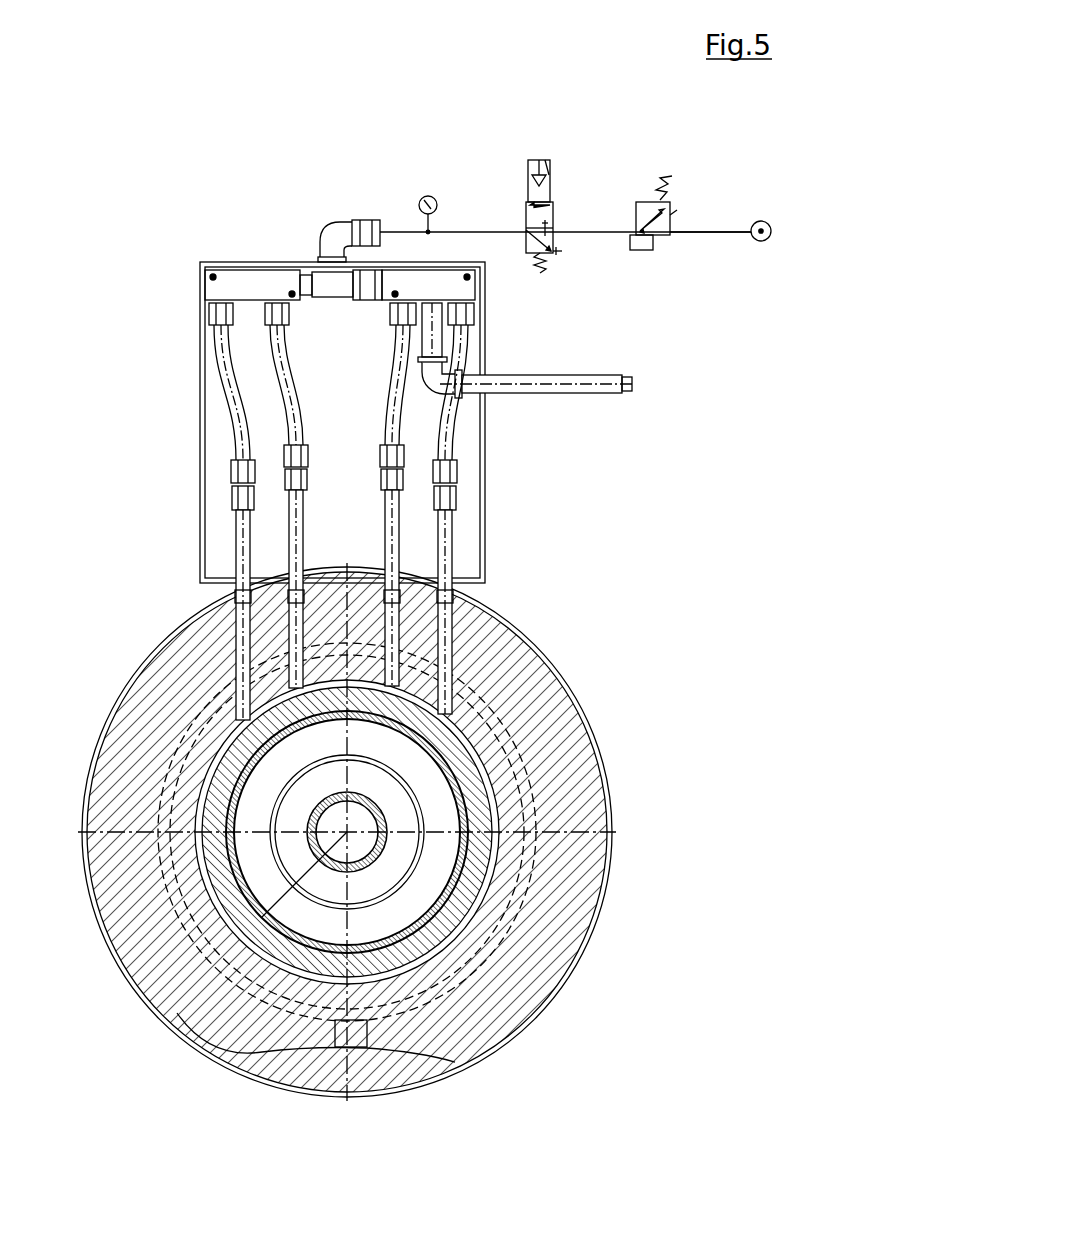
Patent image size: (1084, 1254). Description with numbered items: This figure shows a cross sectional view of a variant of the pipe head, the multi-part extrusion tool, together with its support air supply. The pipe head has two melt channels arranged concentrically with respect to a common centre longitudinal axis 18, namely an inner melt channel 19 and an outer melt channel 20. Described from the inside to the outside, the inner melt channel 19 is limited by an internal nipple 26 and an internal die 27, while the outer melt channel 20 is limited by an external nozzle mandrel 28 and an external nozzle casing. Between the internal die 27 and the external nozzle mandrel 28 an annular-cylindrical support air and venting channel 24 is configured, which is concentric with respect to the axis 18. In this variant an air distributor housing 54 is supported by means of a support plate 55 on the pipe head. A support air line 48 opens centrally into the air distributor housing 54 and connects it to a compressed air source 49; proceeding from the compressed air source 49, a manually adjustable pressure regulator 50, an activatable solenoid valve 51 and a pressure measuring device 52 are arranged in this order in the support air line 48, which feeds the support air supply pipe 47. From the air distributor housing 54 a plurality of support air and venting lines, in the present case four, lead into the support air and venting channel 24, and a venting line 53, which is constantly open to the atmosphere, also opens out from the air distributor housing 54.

The common centre longitudinal axis 18 is at (181, 1021).
The inner melt channel 19 is at (467, 805).
The outer melt channel 20 is at (372, 1046).
The support air and venting channel 24 is at (475, 940).
The internal nipple 26 is at (420, 963).
The internal die 27 is at (477, 867).
The external nozzle mandrel 28 is at (562, 712).
The support air supply pipe 47 is at (333, 235).
The support air line 48 is at (710, 236).
The compressed air source 49 is at (763, 219).
The pressure regulator 50 is at (645, 210).
The solenoid valve 51 is at (527, 210).
The pressure measuring device 52 is at (428, 196).
The venting line 53 is at (575, 372).
The air distributor housing 54 is at (243, 283).
The support plate 55 is at (476, 498).